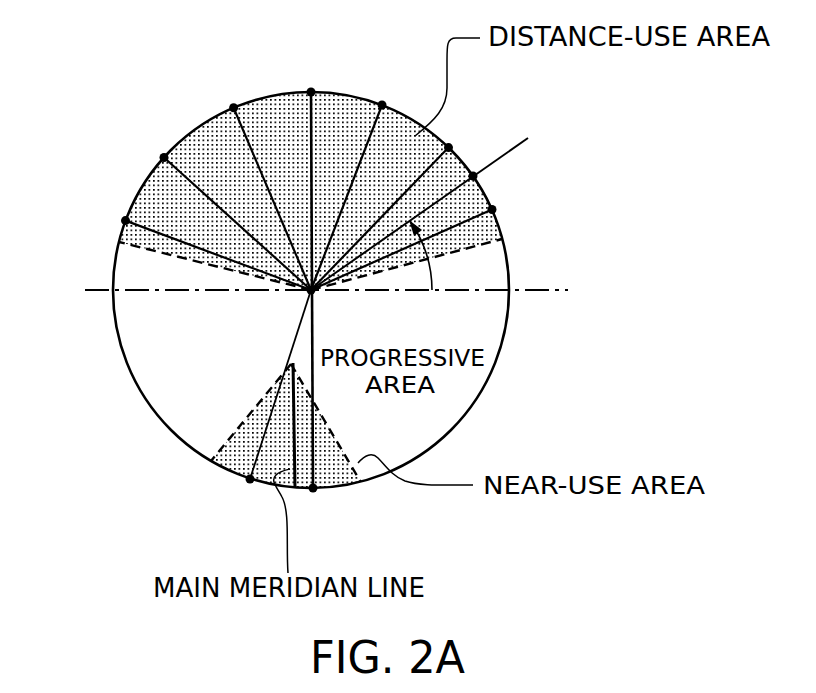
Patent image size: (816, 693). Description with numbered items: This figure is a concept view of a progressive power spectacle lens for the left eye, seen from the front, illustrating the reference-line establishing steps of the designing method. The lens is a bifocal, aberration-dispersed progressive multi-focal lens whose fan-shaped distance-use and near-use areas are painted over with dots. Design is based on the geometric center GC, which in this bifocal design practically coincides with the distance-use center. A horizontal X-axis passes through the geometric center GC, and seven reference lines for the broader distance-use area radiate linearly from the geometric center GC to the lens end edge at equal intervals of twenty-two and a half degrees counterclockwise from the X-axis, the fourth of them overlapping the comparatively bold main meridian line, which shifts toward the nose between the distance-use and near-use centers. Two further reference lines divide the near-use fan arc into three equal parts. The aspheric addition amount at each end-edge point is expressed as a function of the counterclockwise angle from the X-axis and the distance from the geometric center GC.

The geometric center GC is at (327, 302).
The X-axis X is at (336, 291).